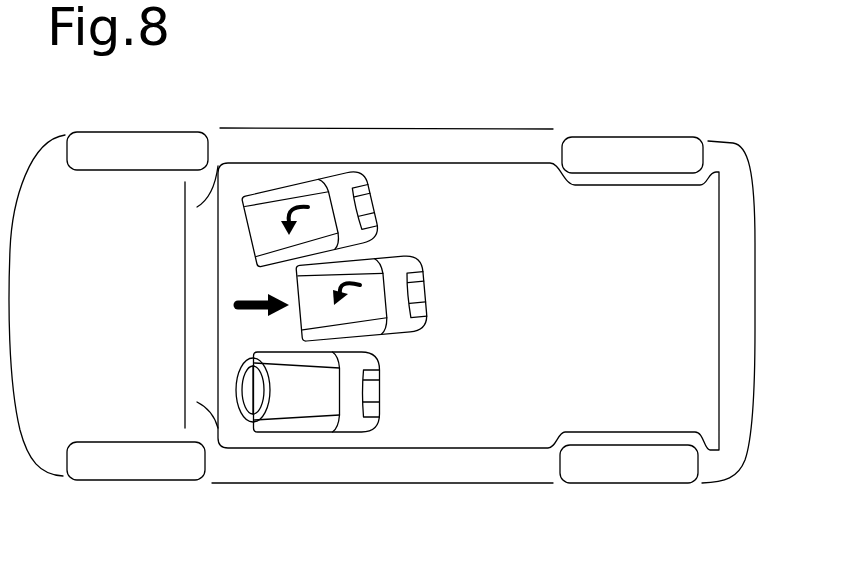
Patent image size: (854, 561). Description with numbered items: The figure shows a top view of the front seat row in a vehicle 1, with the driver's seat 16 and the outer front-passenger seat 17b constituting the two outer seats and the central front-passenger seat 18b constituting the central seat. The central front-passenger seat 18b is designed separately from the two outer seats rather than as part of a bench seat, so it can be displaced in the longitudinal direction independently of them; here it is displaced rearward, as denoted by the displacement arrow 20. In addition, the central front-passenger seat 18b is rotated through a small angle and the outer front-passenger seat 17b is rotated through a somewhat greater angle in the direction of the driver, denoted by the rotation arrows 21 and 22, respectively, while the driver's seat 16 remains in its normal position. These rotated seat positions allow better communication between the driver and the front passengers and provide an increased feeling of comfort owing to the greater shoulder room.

The vehicle 1 is at (590, 102).
The driver's seat 16 is at (293, 402).
The outer front-passenger seat 17b is at (330, 204).
The central front-passenger seat 18b is at (372, 300).
The displacement arrow 20 is at (240, 310).
The rotation arrow 21 is at (348, 277).
The rotation arrow 22 is at (287, 204).